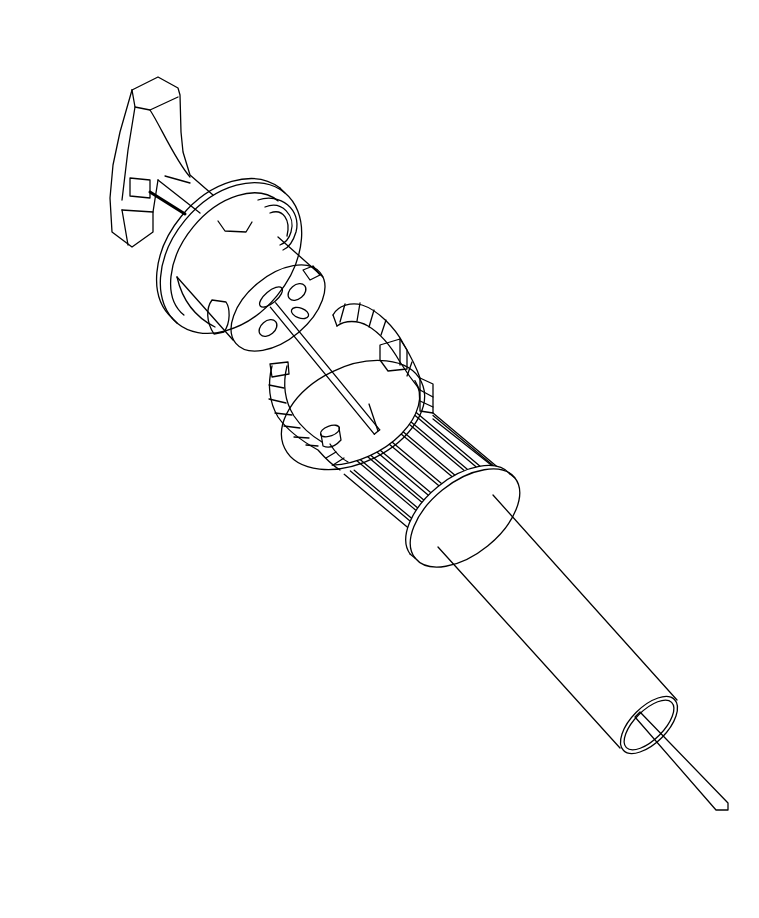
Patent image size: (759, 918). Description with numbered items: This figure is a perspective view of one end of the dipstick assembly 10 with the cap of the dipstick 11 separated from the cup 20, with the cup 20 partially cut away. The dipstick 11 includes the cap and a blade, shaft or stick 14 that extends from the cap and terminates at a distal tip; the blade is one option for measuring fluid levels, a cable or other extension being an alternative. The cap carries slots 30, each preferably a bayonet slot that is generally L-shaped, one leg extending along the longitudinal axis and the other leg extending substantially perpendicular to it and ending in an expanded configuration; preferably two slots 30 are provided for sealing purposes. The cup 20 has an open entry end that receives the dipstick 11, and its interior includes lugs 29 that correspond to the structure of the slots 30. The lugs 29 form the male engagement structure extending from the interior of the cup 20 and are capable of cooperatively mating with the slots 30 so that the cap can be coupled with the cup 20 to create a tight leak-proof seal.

The dipstick assembly 10 is at (360, 106).
The dipstick 11 is at (182, 137).
The blade, shaft or stick 14 is at (710, 783).
The cup 20 is at (270, 437).
The lugs 29 is at (397, 353).
The slots 30 is at (300, 257).